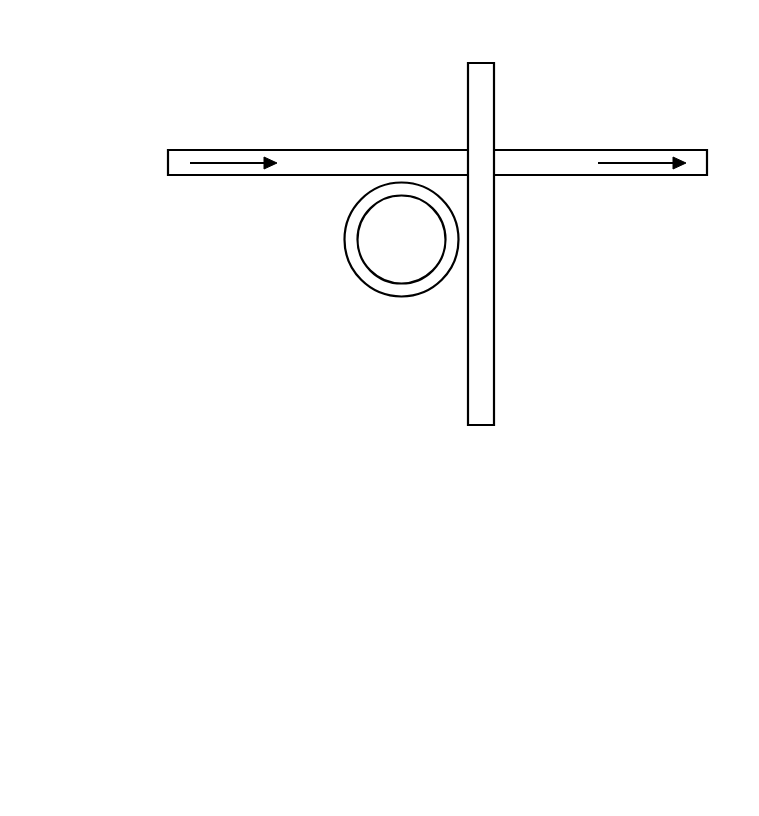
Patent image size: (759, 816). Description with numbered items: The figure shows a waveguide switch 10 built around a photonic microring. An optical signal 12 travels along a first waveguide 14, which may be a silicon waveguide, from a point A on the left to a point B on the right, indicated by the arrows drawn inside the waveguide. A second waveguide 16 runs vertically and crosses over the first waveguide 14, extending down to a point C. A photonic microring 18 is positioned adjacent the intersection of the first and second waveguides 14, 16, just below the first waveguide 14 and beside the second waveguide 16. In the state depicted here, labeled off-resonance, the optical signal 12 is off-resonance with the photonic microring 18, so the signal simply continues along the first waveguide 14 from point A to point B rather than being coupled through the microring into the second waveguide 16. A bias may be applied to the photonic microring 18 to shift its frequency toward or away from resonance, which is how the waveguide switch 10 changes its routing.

The waveguide switch 10 is at (226, 76).
The optical signal 12 is at (228, 165).
The first waveguide 14 is at (292, 176).
The second waveguide 16 is at (494, 210).
The photonic microring 18 is at (345, 255).